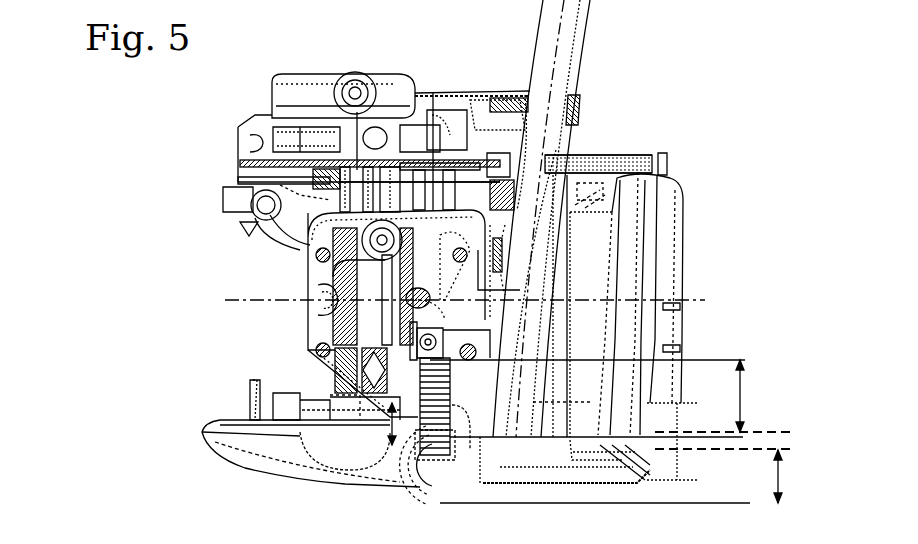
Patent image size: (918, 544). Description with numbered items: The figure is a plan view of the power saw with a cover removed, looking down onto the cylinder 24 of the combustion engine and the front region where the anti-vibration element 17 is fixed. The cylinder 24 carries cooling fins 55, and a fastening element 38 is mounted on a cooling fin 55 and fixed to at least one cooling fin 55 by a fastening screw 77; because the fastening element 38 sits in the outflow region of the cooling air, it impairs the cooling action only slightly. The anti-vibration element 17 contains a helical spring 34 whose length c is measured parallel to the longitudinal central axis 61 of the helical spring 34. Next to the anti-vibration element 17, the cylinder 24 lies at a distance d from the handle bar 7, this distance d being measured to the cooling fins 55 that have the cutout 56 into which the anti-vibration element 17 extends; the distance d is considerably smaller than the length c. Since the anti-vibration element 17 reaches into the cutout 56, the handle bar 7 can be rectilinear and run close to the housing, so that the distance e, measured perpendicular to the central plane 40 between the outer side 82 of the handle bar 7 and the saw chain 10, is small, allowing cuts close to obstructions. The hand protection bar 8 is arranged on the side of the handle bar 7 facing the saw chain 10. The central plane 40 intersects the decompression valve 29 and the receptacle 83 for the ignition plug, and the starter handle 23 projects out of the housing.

The starter handle 23 is at (307, 90).
The decompression valve 29 is at (417, 297).
The cutout 56 is at (445, 318).
The handle bar 7 is at (567, 72).
The cooling fin 55 is at (470, 287).
The hand protection bar 8 is at (643, 230).
The central plane 40 is at (695, 300).
The fastening element 38 is at (445, 333).
The cylinder 24 is at (315, 277).
The receptacle 83 is at (318, 298).
The fastening screw 77 is at (445, 333).
The helical spring 34 is at (422, 417).
The outer side 82 is at (433, 503).
The longitudinal central axis 61 is at (428, 452).
The anti-vibration element 17 is at (457, 430).
The saw chain 10 is at (780, 430).
The distance d is at (390, 433).
The length c is at (746, 396).
The distance e is at (786, 476).